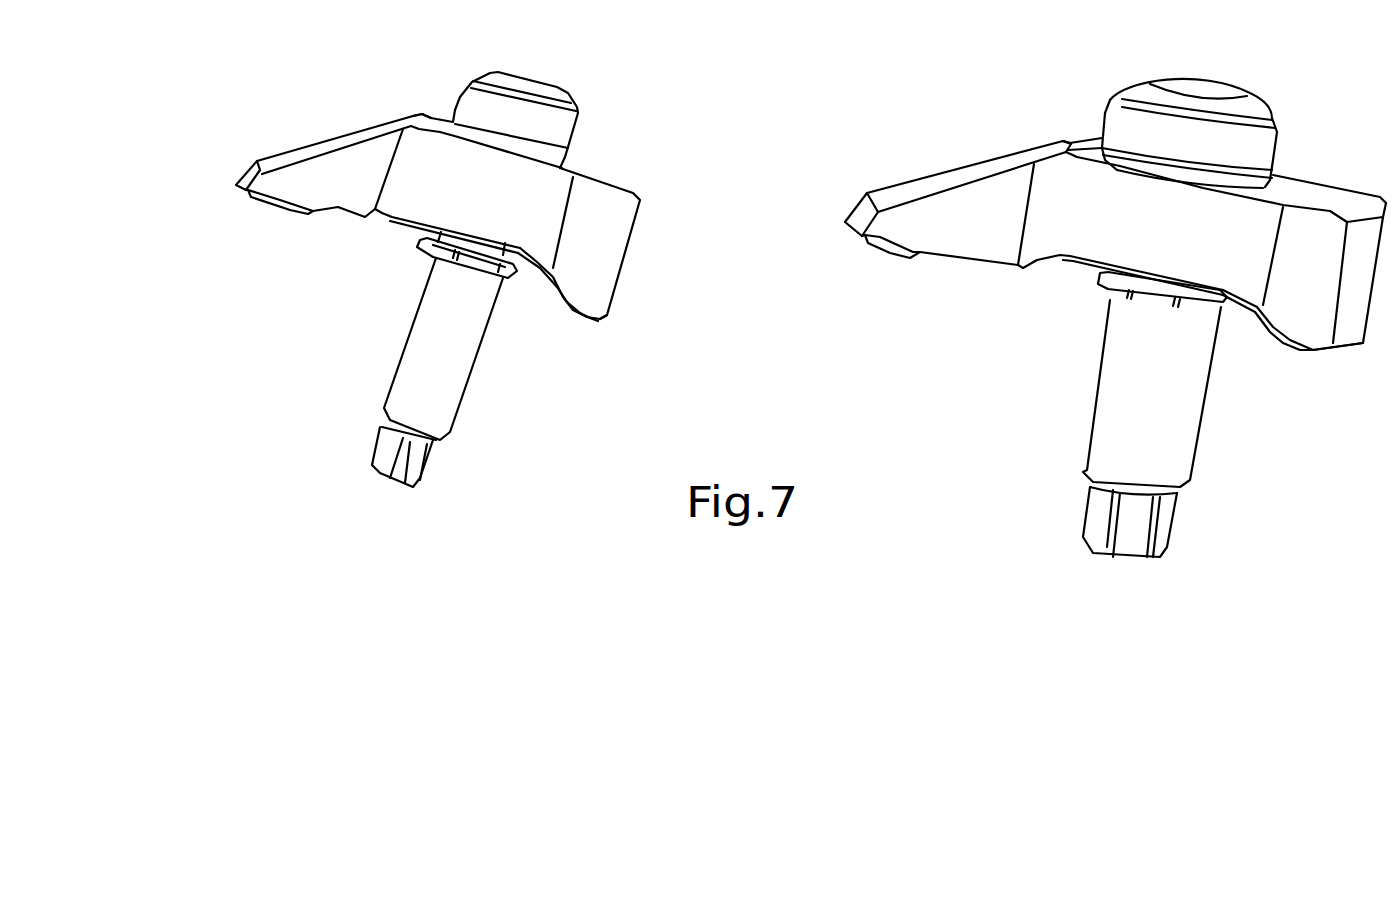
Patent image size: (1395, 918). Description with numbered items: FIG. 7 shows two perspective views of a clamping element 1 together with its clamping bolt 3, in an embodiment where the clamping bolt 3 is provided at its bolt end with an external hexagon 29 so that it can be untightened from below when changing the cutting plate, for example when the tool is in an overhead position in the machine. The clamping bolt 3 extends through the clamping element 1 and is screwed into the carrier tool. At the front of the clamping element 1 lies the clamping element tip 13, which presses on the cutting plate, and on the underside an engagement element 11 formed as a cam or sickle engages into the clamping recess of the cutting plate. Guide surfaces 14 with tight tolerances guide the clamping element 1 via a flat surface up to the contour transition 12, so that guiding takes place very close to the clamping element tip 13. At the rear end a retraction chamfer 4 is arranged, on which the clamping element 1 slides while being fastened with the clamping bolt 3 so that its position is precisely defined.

The clamping element 1 is at (555, 185).
The clamping bolt 3 is at (482, 100).
The retraction chamfer 4 is at (605, 272).
The engagement element 11 is at (293, 210).
The contour transition 12 is at (415, 120).
The clamping element tip 13 is at (282, 157).
The guide surface 14 is at (453, 192).
The external hexagon 29 is at (387, 462).